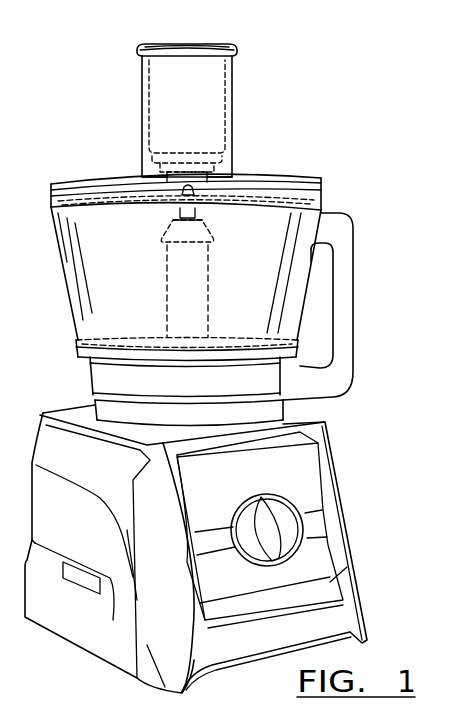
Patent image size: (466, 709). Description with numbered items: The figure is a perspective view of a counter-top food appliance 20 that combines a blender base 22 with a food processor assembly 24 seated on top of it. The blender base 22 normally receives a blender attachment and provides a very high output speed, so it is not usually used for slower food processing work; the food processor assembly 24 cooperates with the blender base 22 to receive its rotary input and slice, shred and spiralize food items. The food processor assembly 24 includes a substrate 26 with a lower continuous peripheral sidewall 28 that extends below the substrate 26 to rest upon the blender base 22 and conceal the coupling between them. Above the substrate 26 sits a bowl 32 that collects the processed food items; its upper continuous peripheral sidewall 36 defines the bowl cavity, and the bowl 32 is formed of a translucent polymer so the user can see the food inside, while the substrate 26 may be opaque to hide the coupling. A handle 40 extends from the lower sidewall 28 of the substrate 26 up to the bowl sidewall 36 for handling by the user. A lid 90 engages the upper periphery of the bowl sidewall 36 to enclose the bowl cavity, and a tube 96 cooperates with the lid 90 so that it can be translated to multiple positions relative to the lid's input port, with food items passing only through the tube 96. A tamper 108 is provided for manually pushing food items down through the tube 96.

The counter-top food appliance 20 is at (83, 99).
The blender base 22 is at (348, 510).
The food processor assembly 24 is at (305, 172).
The substrate 26 is at (262, 357).
The lower continuous peripheral sidewall 28 is at (267, 405).
The bowl 32 is at (250, 302).
The upper continuous peripheral sidewall 36 is at (266, 248).
The handle 40 is at (351, 232).
The lid 90 is at (275, 172).
The tube 96 is at (233, 117).
The tamper 108 is at (198, 44).